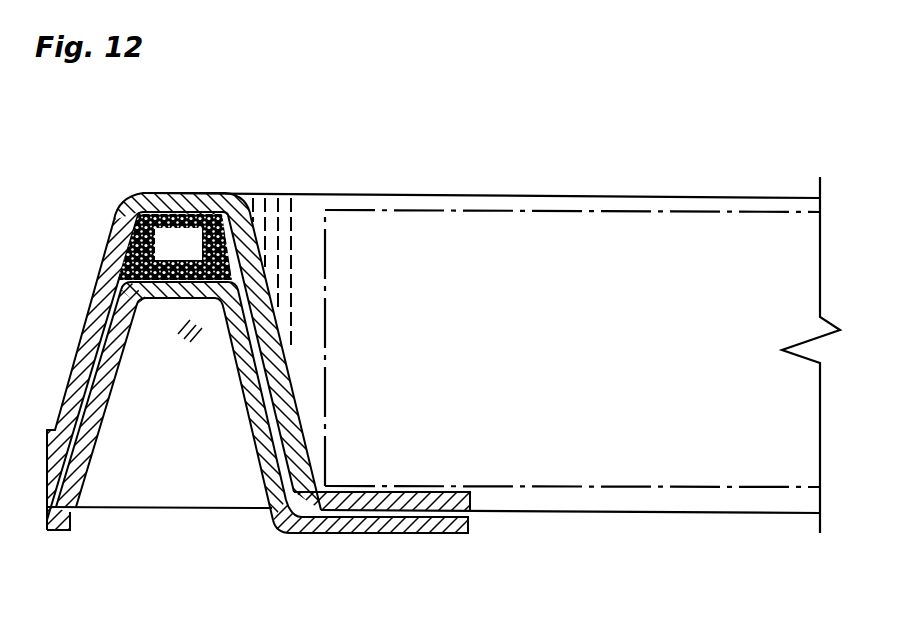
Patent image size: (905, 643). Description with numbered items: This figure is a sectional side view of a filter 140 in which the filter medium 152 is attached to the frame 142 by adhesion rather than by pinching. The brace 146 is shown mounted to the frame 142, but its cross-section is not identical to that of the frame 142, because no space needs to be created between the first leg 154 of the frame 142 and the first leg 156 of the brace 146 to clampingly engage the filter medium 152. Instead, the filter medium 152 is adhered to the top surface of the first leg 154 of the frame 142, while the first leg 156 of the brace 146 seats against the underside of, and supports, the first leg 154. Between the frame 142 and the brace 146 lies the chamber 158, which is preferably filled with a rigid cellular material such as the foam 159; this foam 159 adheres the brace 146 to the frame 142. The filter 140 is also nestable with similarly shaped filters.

The filter 140 is at (393, 157).
The frame 142 is at (184, 339).
The brace 146 is at (262, 440).
The filter medium 152 is at (557, 210).
The first leg of the frame 154 is at (473, 489).
The first leg of the brace 156 is at (347, 528).
The chamber 158 is at (196, 255).
The foam 159 is at (222, 208).